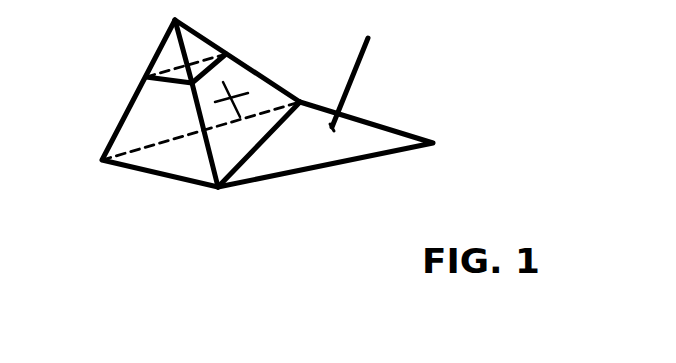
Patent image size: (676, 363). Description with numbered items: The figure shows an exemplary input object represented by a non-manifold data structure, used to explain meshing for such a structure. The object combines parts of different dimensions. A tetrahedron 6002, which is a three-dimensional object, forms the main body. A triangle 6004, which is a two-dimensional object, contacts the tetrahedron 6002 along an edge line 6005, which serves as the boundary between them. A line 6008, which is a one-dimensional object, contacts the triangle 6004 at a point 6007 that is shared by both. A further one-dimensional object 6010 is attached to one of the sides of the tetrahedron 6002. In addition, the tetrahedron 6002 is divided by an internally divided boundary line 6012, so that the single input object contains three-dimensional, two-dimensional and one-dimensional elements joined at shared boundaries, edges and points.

The tetrahedron 6002 is at (138, 120).
The triangle 6004 is at (367, 130).
The edge line 6005 is at (250, 158).
The point 6007 is at (333, 130).
The line 6008 is at (362, 64).
The one-dimensional object 6010 is at (222, 80).
The internally divided boundary line 6012 is at (168, 72).